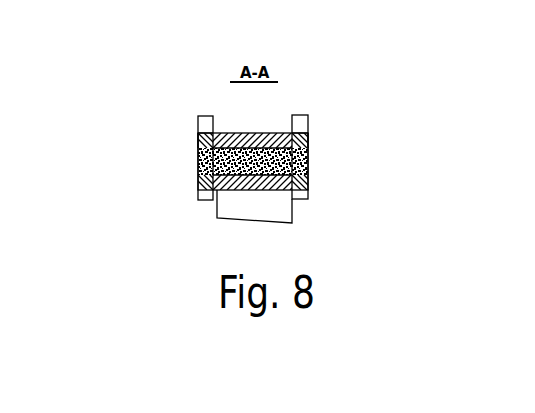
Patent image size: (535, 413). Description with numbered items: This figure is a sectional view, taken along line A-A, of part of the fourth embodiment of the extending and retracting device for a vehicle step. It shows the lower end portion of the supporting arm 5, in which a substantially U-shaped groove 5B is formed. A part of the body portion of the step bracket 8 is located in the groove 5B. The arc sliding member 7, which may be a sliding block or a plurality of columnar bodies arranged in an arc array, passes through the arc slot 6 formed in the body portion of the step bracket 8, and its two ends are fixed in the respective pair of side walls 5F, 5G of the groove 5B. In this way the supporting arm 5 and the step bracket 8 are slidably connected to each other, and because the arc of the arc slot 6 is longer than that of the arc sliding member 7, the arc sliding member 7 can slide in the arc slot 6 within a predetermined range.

The supporting arm 5 is at (238, 133).
The groove 5B is at (280, 125).
The side wall of the groove 5F is at (196, 132).
The side wall of the groove 5G is at (307, 127).
The arc slot 6 is at (200, 175).
The arc sliding member 7 is at (199, 153).
The step bracket 8 is at (277, 212).